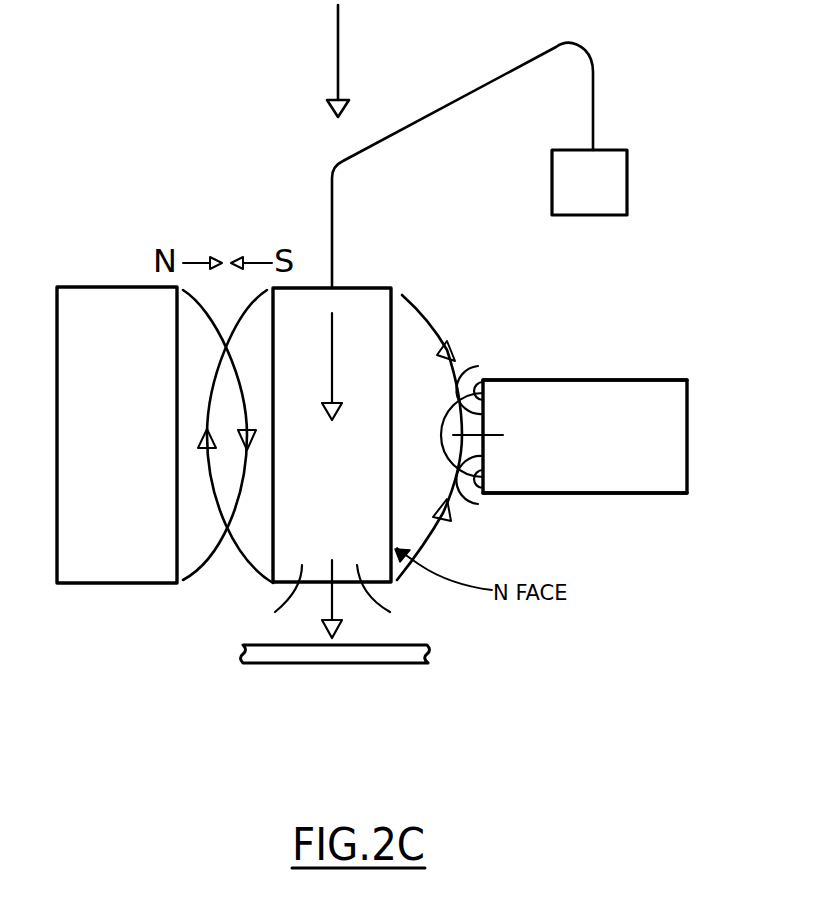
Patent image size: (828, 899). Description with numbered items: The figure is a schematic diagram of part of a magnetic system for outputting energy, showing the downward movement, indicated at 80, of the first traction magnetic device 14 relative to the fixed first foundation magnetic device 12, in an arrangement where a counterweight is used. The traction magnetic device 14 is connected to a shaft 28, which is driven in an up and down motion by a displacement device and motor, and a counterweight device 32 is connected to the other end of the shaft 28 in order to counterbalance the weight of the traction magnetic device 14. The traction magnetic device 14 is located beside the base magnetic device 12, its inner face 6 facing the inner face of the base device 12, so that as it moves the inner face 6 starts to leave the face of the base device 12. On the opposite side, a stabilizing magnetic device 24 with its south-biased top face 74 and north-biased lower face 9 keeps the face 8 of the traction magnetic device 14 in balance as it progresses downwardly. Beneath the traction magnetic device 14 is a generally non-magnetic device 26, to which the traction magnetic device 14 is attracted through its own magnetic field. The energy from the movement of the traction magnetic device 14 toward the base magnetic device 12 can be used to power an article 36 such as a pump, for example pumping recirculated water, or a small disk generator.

The downward movement 80 is at (338, 41).
The shaft 28 is at (332, 192).
The counterweight device 32 is at (589, 182).
The first foundation magnetic device 12 is at (117, 435).
The first traction magnetic device 14 is at (332, 463).
The inner face 6 is at (270, 543).
The face 8 is at (390, 358).
The magnetic device 24 is at (564, 435).
The south-biased face 74 is at (548, 347).
The north-biased face 9 is at (553, 493).
The article 36 is at (348, 585).
The non-magnetic device 26 is at (335, 665).